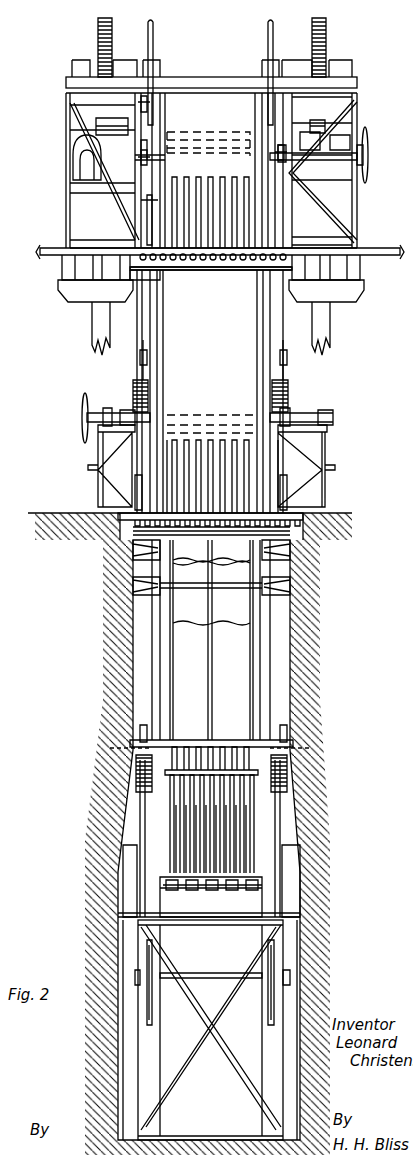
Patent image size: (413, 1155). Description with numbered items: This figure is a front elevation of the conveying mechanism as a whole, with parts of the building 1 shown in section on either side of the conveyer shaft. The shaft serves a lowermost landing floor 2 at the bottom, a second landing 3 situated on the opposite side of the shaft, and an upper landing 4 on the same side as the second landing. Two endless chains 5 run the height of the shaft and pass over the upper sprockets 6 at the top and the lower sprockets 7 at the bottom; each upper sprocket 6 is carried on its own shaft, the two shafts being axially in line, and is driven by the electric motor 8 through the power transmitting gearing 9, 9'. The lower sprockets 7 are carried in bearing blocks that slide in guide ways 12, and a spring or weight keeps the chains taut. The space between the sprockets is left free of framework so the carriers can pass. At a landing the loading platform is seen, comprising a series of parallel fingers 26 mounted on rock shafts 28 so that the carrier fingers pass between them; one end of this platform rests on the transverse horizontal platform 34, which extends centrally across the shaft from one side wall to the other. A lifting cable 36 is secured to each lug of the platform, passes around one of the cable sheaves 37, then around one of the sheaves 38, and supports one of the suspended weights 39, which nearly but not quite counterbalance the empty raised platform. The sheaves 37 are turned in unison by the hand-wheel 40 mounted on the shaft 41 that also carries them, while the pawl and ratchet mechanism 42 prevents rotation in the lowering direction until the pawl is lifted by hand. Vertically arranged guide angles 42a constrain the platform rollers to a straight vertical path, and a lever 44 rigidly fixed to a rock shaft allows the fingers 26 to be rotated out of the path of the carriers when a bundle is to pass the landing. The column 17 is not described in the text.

The parts of the building 1 is at (115, 610).
The lowermost landing floor 2 is at (305, 903).
The second landing 3 is at (40, 512).
The upper landing 4 is at (370, 252).
The endless chains 5 is at (150, 678).
The upper sprockets 6 is at (154, 46).
The lower sprockets 7 is at (152, 1020).
The electric motor 8 is at (72, 150).
The power transmitting gearing 9 is at (84, 171).
The power transmitting gearing 9' is at (207, 47).
The guide ways 12 is at (143, 1060).
The column 17 is at (166, 348).
The platform fingers 26 is at (200, 889).
The rock shafts 28 is at (238, 889).
The transverse horizontal platform 34 is at (135, 545).
The lifting cable 36 is at (283, 225).
The cable sheaves 37 is at (148, 157).
The sheaves 38 is at (150, 103).
The suspended weights 39 is at (298, 172).
The hand-wheel 40 is at (368, 168).
The shaft 41 is at (268, 148).
The pawl and ratchet mechanism 42 is at (365, 140).
The guide angles 42a is at (135, 860).
The lever 44 is at (148, 205).